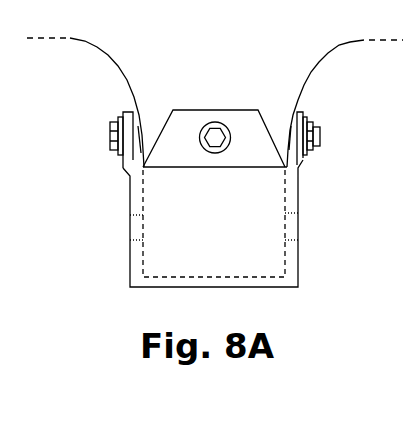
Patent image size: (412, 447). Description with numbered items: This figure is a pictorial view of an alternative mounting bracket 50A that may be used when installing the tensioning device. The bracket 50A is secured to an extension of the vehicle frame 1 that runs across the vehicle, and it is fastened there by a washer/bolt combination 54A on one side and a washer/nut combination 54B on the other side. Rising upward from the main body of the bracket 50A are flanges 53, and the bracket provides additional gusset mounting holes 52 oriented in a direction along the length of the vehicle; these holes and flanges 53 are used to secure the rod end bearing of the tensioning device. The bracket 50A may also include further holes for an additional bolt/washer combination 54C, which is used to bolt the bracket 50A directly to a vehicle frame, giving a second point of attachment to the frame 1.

The vehicle frame 1 is at (97, 47).
The bracket 50A is at (298, 194).
The gusset mounting holes 52 is at (130, 225).
The flanges 53 is at (300, 110).
The washer/bolt combination 54A is at (110, 124).
The washer/nut combination 54B is at (321, 140).
The bolt/washer combination 54C is at (216, 122).